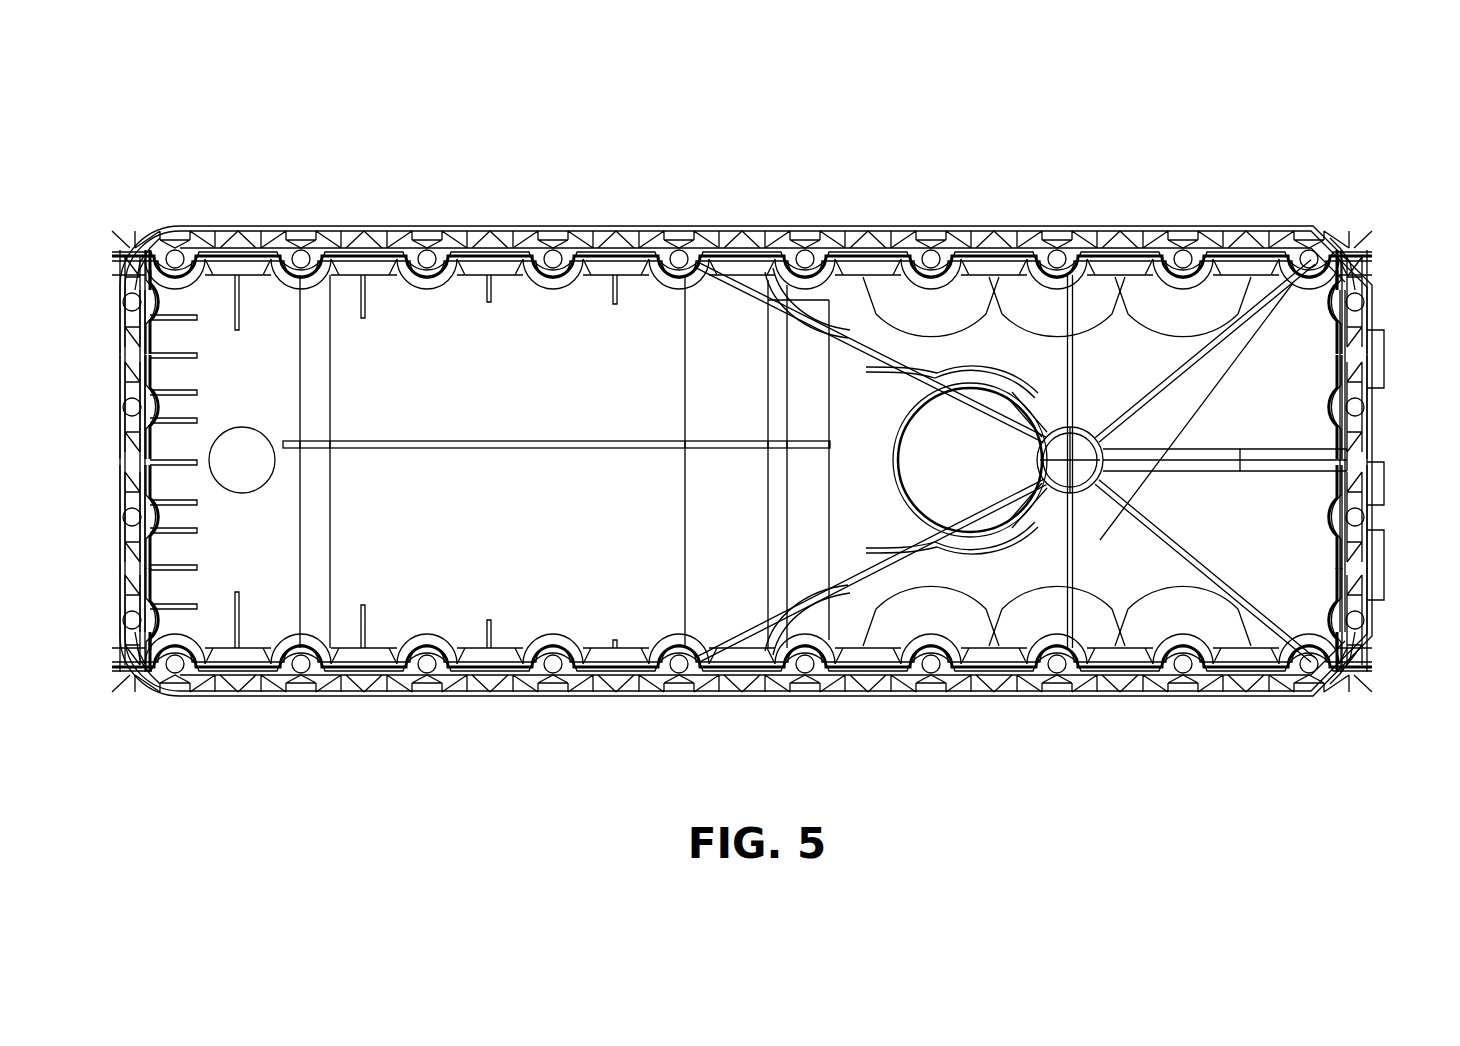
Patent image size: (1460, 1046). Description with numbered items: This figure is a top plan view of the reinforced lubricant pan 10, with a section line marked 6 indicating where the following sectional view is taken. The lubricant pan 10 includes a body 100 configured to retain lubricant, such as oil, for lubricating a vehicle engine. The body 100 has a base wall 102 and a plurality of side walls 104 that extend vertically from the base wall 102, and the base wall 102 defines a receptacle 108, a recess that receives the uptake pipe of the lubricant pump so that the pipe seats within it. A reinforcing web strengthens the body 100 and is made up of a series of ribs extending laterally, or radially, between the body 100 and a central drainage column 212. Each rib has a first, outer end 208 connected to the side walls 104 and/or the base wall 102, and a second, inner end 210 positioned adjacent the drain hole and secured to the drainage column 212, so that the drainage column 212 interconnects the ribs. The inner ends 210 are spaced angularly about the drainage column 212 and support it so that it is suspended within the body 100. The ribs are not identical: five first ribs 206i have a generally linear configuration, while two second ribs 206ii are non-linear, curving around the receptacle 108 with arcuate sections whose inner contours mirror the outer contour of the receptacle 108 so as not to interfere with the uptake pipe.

The lubricant pan 10 is at (213, 112).
The body 100 is at (342, 190).
The base wall 102 is at (1268, 548).
The side walls 104 is at (494, 238).
The receptacle 108 is at (907, 530).
The first rib 206i is at (1057, 305).
The second rib 206ii is at (847, 565).
The first, outer ends 208 is at (725, 282).
The second, inner ends 210 is at (960, 325).
The drainage column 212 is at (840, 328).
The section line 6- 6 is at (178, 583).